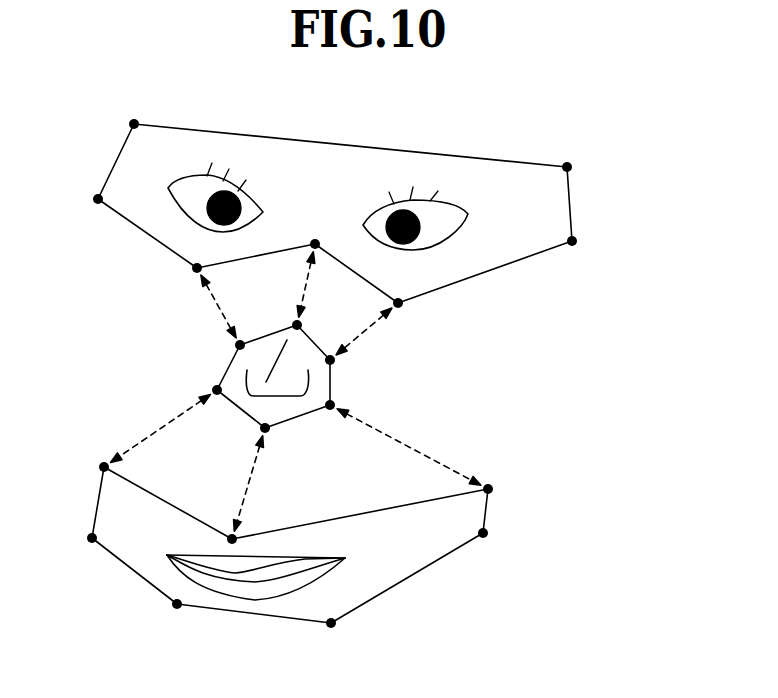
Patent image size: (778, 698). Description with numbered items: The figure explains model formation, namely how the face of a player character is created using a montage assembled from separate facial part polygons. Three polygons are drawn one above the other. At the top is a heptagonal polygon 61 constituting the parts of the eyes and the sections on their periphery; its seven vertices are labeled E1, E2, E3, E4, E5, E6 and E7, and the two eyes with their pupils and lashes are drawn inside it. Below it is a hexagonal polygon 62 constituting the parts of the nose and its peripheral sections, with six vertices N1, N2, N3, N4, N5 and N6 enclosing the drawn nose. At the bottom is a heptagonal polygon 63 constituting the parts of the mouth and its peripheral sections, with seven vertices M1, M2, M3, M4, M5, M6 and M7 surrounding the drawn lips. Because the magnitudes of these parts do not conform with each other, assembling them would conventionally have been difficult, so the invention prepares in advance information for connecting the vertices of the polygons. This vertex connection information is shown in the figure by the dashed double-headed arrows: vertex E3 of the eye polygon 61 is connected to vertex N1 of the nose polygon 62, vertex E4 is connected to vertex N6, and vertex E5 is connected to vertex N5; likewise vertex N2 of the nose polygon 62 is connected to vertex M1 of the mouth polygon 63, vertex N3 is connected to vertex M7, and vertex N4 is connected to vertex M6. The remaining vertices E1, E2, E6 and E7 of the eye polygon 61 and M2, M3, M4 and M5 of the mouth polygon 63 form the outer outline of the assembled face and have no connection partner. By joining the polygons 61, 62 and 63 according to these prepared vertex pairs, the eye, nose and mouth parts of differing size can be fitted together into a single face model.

The heptagonal polygon 61 is at (570, 207).
The hexagonal polygon 62 is at (332, 387).
The heptagonal polygon 63 is at (415, 575).
The vertex E1 is at (117, 126).
The vertex E2 is at (79, 204).
The vertex E3 is at (179, 279).
The vertex E4 is at (296, 263).
The vertex E5 is at (418, 317).
The vertex E6 is at (591, 244).
The vertex E7 is at (585, 163).
The vertex N1 is at (221, 353).
The vertex N2 is at (214, 411).
The vertex N3 is at (286, 440).
The vertex N4 is at (333, 423).
The vertex N5 is at (351, 371).
The vertex N6 is at (319, 323).
The vertex M1 is at (84, 460).
The vertex M2 is at (70, 540).
The vertex M3 is at (171, 624).
The vertex M4 is at (334, 640).
The vertex M5 is at (505, 543).
The vertex M6 is at (511, 495).
The vertex M7 is at (257, 524).